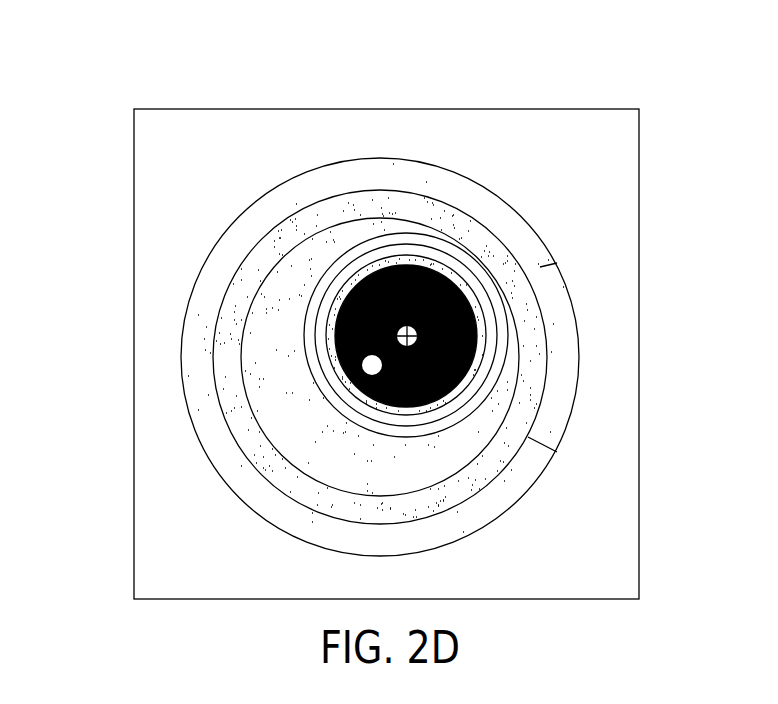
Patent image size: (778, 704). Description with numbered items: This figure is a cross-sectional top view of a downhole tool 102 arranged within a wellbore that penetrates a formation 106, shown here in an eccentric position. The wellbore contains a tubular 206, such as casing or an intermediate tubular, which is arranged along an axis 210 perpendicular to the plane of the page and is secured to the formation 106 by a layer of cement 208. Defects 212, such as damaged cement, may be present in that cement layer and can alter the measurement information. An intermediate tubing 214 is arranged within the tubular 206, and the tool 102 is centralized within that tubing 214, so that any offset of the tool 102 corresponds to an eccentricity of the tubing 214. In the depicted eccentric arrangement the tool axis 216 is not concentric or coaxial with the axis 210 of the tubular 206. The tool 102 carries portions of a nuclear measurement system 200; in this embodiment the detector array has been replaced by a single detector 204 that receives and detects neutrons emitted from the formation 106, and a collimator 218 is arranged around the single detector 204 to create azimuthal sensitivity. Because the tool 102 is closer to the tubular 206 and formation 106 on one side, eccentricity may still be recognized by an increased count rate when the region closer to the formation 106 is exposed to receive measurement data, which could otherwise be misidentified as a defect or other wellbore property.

The downhole tool 102 is at (315, 265).
The formation 106 is at (585, 160).
The nuclear measurement system 200 is at (476, 211).
The detector 204 is at (371, 367).
The tubular 206 is at (350, 208).
The layer of cement 208 is at (388, 177).
The axis 210 is at (365, 395).
The defects 212 is at (565, 345).
The intermediate tubing 214 is at (490, 400).
The tool axis 216 is at (408, 410).
The collimator 218 is at (439, 150).